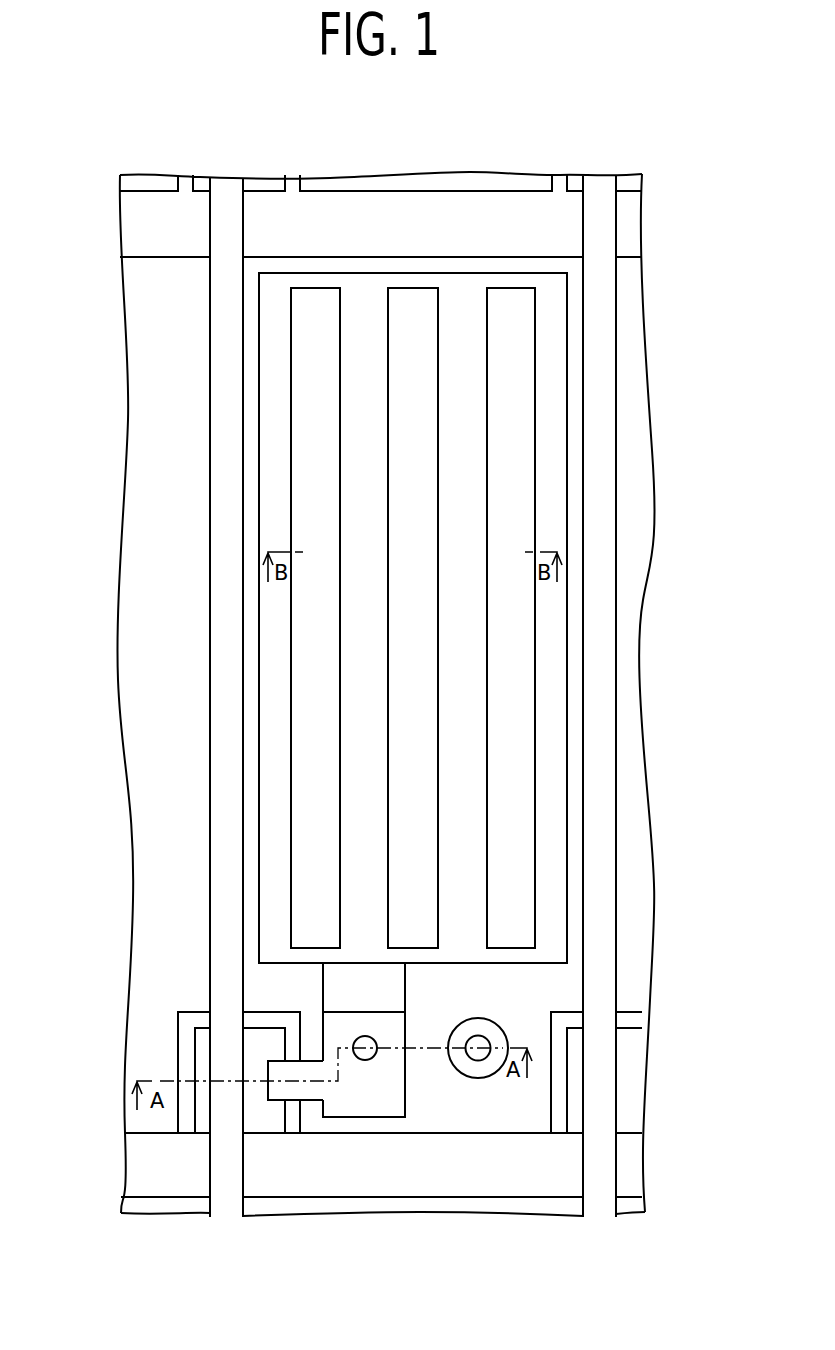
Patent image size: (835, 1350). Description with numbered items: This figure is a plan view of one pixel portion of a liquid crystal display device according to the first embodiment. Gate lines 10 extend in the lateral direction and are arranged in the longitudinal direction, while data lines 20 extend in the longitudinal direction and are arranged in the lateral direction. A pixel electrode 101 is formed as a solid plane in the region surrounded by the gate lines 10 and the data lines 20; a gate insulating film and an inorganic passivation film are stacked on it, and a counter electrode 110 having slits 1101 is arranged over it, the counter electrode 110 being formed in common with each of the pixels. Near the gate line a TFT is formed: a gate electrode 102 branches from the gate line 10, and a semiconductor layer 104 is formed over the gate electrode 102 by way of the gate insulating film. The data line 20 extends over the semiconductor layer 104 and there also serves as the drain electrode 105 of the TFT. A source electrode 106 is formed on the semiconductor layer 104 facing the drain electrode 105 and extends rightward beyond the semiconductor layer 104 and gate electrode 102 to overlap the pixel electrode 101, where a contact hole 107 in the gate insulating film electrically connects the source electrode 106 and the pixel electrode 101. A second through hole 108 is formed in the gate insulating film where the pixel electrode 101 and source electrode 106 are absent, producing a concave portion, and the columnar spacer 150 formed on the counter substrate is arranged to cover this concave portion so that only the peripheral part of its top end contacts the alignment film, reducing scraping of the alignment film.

The gate line 10 is at (438, 1173).
The data line 20 is at (225, 393).
The counter electrode 110 is at (640, 652).
The pixel electrode 101 is at (555, 735).
The slit 1101 is at (513, 433).
The gate electrode 102 is at (190, 1020).
The drain electrode 105 is at (225, 1055).
The semiconductor layer 104 is at (267, 1117).
The source electrode 106 is at (310, 1092).
The contact hole 107 is at (365, 1062).
The columnar spacer 150 is at (470, 1078).
The through hole 108 is at (480, 1078).